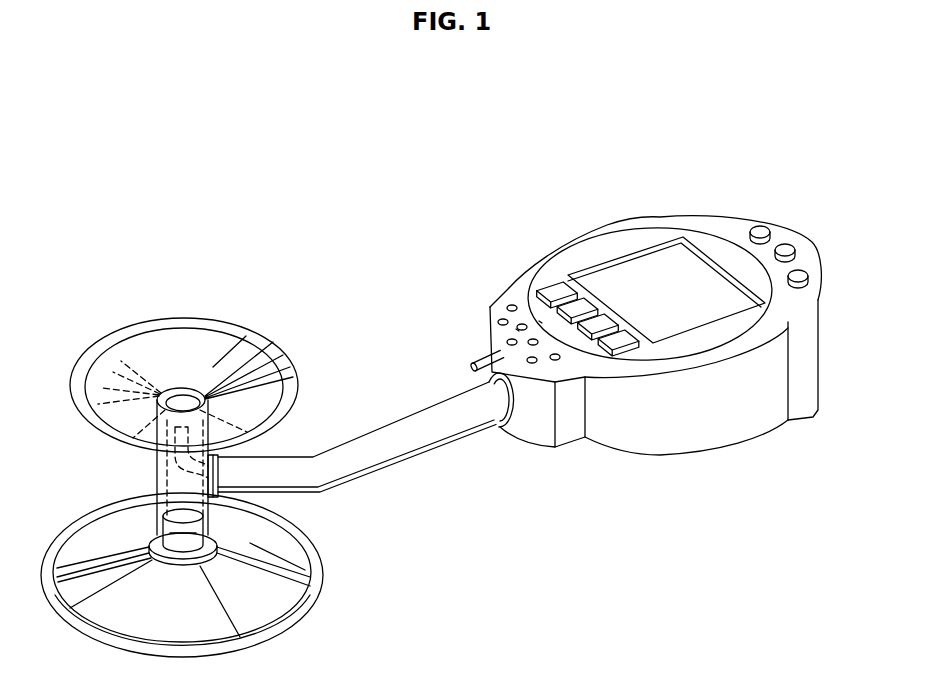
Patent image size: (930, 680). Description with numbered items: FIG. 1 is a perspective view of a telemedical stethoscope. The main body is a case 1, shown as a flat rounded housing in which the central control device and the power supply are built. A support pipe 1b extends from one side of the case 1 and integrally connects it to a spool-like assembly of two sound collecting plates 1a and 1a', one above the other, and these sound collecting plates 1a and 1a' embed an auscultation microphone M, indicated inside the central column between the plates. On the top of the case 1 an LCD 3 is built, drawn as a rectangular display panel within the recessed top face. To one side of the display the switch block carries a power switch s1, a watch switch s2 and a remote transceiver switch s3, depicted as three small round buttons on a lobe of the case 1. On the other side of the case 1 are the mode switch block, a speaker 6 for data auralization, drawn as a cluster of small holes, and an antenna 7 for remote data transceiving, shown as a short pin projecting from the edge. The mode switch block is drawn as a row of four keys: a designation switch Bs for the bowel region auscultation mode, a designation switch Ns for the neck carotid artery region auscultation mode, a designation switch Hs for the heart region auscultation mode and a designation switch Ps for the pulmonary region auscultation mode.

The case 1 is at (638, 222).
The sound collecting plate 1a is at (197, 575).
The sound collecting plate 1a' is at (184, 355).
The support pipe 1b is at (389, 422).
The LCD 3 is at (622, 273).
The speaker 6 is at (482, 299).
The antenna 7 is at (485, 360).
The auscultation microphone M is at (160, 533).
The designation switch for bowel region auscultation mode Bs is at (560, 282).
The designation switch for neck carotid artery region auscultation mode Ns is at (548, 288).
The designation switch for heart region auscultation mode Hs is at (590, 334).
The designation switch for pulmonary region auscultation mode Ps is at (613, 350).
The power switch s1 is at (761, 231).
The watch switch s2 is at (786, 249).
The remote transceiver switch s3 is at (800, 274).